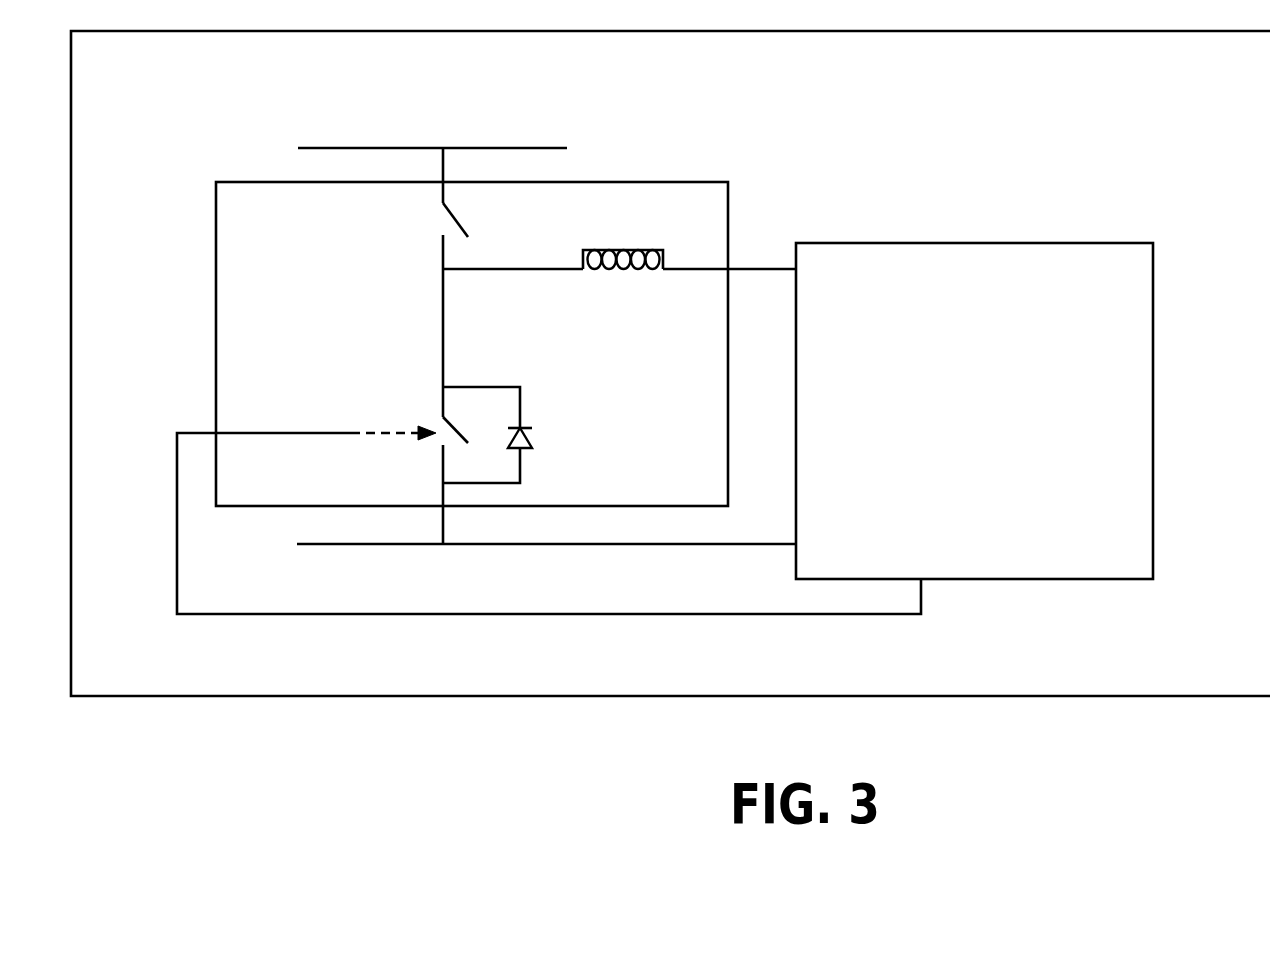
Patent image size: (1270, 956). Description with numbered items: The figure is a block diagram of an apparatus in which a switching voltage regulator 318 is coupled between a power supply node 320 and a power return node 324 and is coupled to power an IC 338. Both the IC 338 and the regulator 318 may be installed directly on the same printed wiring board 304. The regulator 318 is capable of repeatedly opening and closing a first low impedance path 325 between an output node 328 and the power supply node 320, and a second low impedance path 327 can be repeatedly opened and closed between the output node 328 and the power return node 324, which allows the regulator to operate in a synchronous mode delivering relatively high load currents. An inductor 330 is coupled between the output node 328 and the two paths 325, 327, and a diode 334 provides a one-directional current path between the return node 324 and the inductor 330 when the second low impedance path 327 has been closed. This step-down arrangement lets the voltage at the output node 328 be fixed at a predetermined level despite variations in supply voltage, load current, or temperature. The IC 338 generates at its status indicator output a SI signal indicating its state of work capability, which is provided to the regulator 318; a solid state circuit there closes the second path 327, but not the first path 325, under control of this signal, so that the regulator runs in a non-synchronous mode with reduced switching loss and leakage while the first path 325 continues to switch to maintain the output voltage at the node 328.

The printed wiring board 304 is at (1222, 76).
The switching voltage regulator 318 is at (712, 182).
The power supply node 320 is at (535, 148).
The power return node 324 is at (357, 545).
The first low impedance path 325 is at (443, 258).
The second low impedance path 327 is at (440, 405).
The output node 328 is at (775, 268).
The inductor 330 is at (625, 246).
The diode 334 is at (527, 426).
The IC 338 is at (1128, 242).